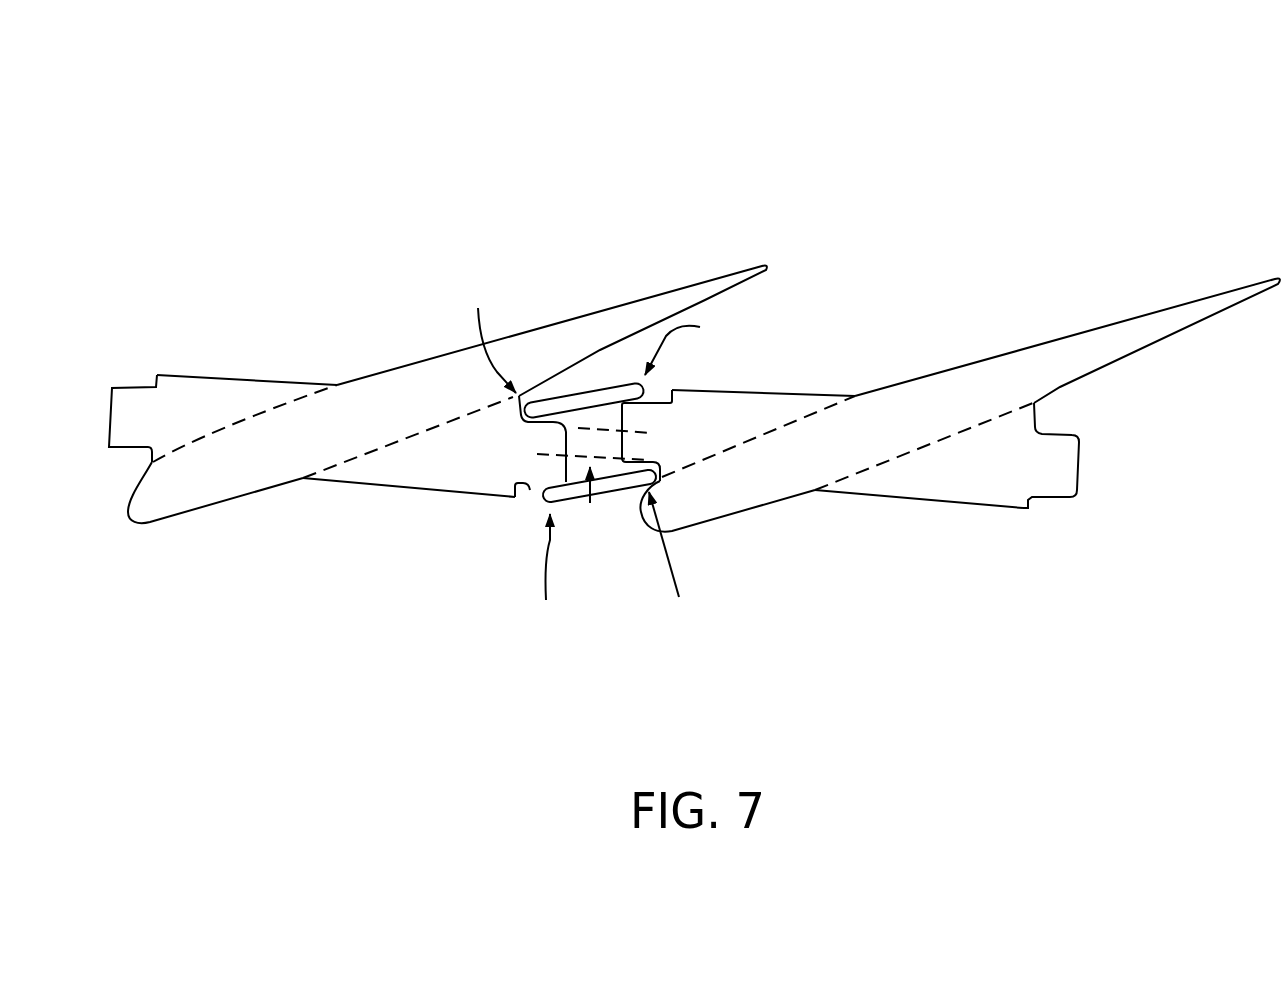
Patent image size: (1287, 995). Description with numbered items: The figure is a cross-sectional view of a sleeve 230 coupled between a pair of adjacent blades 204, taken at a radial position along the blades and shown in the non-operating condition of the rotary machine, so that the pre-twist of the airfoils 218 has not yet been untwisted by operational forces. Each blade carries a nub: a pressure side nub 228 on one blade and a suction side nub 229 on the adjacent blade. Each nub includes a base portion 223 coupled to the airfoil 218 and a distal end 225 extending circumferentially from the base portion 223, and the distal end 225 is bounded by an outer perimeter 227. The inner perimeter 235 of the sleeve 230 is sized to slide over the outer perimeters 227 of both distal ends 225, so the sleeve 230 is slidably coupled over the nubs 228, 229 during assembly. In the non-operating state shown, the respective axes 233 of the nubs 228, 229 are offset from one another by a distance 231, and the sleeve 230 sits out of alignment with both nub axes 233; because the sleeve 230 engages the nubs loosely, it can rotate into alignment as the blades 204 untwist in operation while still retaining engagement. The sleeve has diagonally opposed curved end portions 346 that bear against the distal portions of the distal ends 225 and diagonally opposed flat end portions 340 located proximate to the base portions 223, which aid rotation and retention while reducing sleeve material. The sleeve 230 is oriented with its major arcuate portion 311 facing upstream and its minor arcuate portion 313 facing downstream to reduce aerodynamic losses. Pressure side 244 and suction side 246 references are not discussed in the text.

The blade 204 is at (865, 202).
The airfoil 218 is at (708, 290).
The base portion 223 is at (177, 388).
The distal end 225 is at (118, 399).
The outer perimeter 227 is at (530, 490).
The pressure side nub 228 is at (447, 462).
The suction side nub 229 is at (245, 378).
The sleeve 230 is at (607, 500).
The distance 231 is at (560, 445).
The axis 233 is at (625, 430).
The inner perimeter 235 is at (603, 498).
The pressure side 244 is at (212, 505).
The suction side 246 is at (405, 368).
The major arcuate portion 311 is at (577, 483).
The minor arcuate portion 313 is at (593, 416).
The flat end portion 340 is at (586, 453).
The curved end portion 346 is at (613, 469).